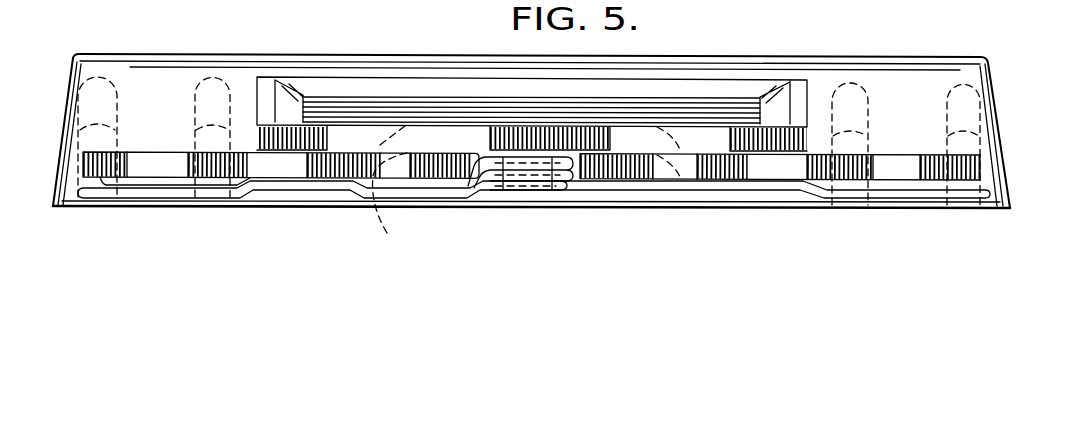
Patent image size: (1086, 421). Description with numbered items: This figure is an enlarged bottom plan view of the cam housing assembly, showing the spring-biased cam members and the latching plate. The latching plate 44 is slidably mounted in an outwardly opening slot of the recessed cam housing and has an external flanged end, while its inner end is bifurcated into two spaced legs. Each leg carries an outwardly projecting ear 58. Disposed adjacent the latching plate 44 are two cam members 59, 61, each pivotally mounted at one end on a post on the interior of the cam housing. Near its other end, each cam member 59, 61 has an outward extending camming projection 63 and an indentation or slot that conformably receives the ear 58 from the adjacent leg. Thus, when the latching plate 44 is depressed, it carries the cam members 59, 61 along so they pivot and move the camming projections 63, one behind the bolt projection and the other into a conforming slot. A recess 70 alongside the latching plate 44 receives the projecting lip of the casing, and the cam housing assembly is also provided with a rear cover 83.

The latching plate 44 is at (348, 128).
The recess 70 is at (713, 112).
The cam member 59 is at (140, 150).
The cam member 61 is at (893, 158).
The camming projection 63 is at (88, 162).
The ear 58 is at (526, 192).
The rear cover 83 is at (650, 202).